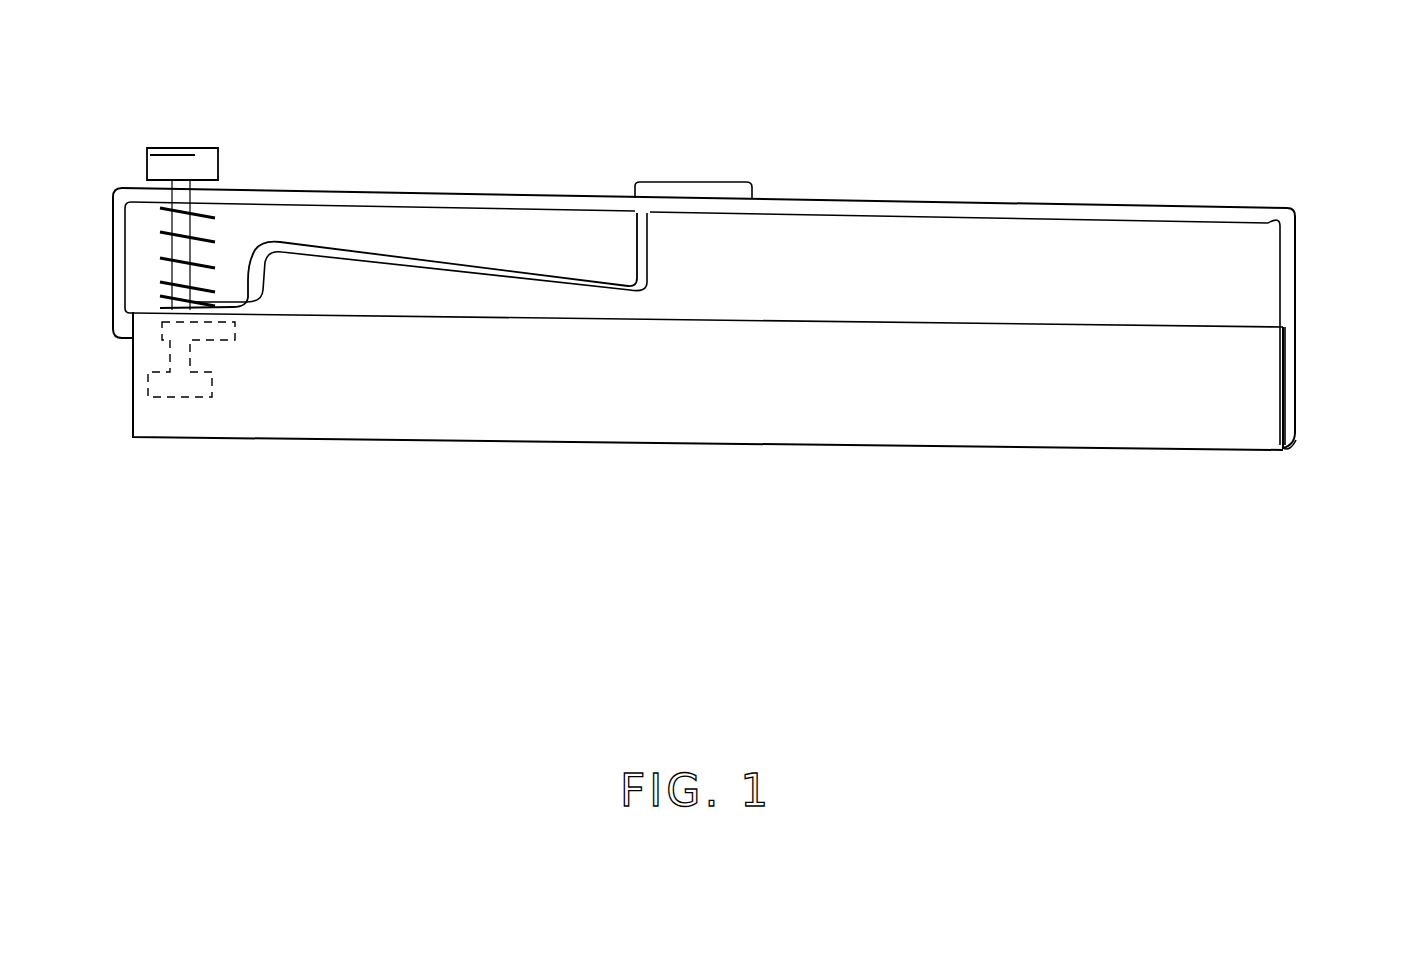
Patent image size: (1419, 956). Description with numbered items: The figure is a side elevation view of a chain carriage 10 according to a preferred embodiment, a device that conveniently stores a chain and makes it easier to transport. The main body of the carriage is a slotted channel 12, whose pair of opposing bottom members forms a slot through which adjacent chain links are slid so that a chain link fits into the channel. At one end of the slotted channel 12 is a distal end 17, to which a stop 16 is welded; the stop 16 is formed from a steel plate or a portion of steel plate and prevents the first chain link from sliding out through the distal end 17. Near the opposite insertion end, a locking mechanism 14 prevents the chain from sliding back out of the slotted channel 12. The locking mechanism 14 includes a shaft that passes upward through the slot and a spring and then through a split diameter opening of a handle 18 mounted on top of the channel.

The chain carriage 10 is at (766, 397).
The slotted channel 12 is at (1163, 452).
The locking mechanism 14 is at (233, 243).
The stop 16 is at (1297, 388).
The distal end 17 is at (1290, 435).
The handle 18 is at (1188, 205).